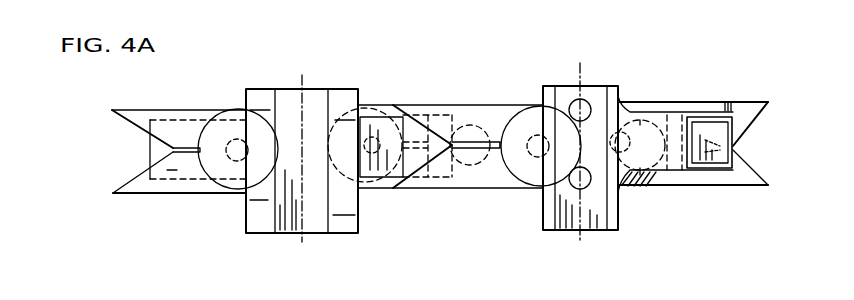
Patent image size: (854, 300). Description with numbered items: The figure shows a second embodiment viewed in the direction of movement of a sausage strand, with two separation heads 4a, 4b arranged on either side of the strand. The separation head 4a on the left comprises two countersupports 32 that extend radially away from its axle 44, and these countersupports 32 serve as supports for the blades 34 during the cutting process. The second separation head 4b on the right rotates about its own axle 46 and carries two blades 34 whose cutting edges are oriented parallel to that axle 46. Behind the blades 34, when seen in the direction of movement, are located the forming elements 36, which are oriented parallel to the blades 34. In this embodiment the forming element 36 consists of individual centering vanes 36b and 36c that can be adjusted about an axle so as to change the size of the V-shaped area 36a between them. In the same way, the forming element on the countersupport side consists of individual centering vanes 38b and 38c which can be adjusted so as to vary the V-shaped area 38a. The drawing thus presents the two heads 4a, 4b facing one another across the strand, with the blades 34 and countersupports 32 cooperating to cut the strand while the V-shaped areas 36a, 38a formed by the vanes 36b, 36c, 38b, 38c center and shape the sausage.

The countersupport 32 is at (148, 157).
The blade 34 is at (725, 156).
The forming element 36 is at (725, 148).
The V-shaped area 36a is at (733, 123).
The centering vane 36b is at (738, 113).
The centering vane 36c is at (740, 177).
The V-shaped area 38a is at (147, 147).
The centering vane 38b is at (142, 115).
The centering vane 38c is at (142, 185).
The axle 44 is at (302, 237).
The axle 46 is at (582, 237).
The separation head 4a is at (281, 238).
The separation head 4b is at (569, 238).